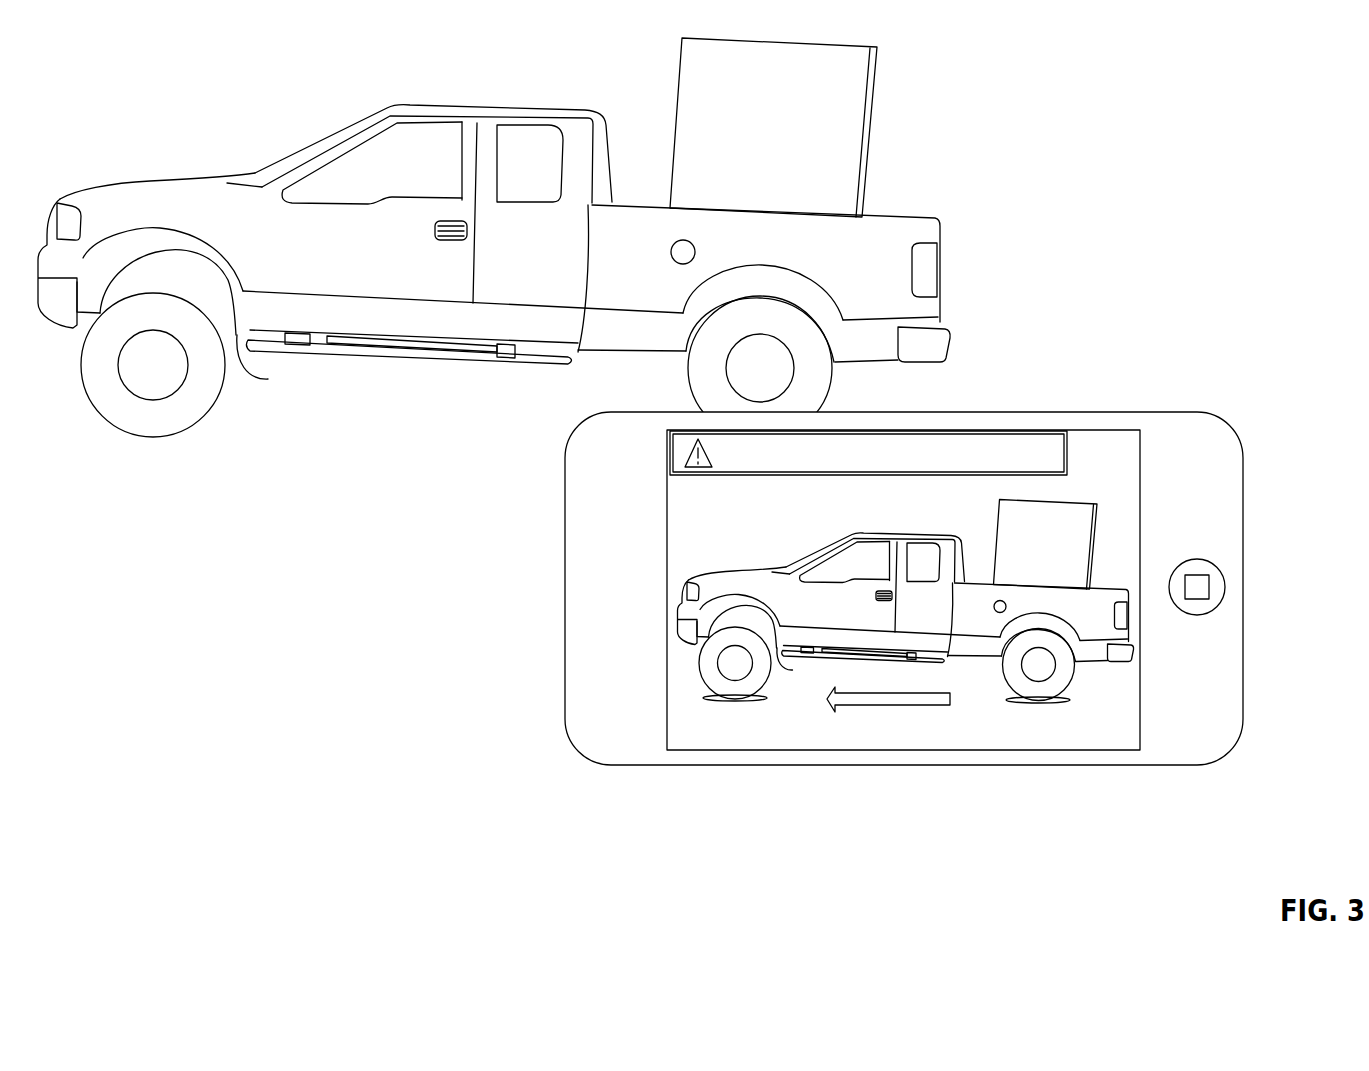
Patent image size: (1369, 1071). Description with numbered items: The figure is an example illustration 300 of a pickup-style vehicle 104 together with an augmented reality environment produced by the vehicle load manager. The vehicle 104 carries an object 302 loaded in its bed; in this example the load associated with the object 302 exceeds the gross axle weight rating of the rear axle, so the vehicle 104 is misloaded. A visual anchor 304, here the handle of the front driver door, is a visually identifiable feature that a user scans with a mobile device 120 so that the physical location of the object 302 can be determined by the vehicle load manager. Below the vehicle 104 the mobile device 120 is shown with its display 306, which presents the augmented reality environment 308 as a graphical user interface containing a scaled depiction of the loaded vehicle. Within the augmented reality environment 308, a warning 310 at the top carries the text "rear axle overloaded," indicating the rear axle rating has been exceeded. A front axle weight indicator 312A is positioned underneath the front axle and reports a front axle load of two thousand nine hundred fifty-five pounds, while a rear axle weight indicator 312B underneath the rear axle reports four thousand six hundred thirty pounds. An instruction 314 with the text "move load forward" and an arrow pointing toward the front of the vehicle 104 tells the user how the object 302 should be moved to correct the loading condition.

The vehicle 104 is at (175, 139).
The illustration 300 is at (1155, 71).
The object 302 is at (795, 40).
The visual anchor 304 is at (442, 247).
The mobile device 120 is at (1056, 410).
The display 306 is at (664, 576).
The augmented reality environment 308 is at (688, 503).
The warning 310 is at (686, 430).
The front axle weight indicator 312A is at (737, 730).
The rear axle weight indicator 312B is at (1024, 735).
The instruction 314 is at (890, 745).